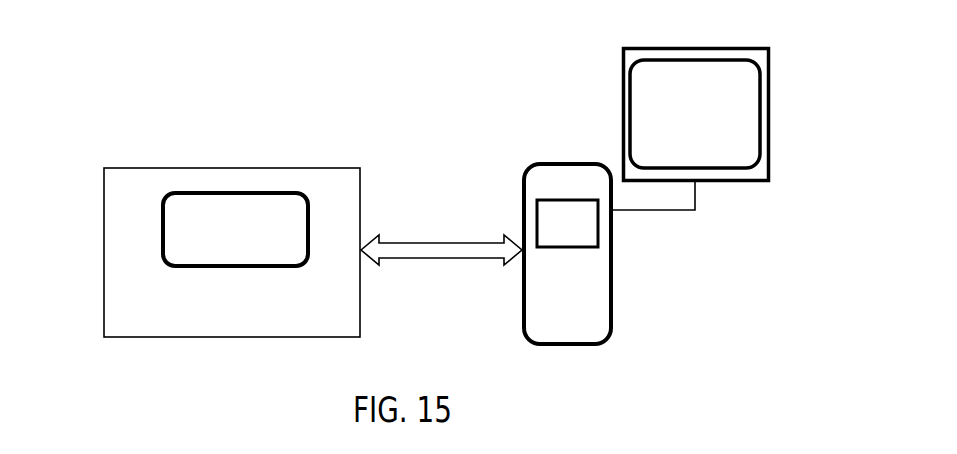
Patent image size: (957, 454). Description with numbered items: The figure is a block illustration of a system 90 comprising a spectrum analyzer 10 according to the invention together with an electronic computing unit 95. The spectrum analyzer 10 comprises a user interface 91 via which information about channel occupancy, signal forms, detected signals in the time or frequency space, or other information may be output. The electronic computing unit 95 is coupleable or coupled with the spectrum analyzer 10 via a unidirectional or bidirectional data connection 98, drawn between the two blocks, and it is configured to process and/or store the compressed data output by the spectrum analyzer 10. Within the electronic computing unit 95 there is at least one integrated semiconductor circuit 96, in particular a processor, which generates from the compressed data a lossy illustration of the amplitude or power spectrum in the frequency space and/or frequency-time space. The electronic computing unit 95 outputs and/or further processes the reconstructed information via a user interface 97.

The system 90 is at (80, 75).
The spectrum analyzer 10 is at (216, 229).
The user interface 91 is at (255, 227).
The data connection 98 is at (441, 231).
The electronic computing unit 95 is at (548, 237).
The integrated semiconductor circuit 96 is at (592, 243).
The user interface 97 is at (676, 96).